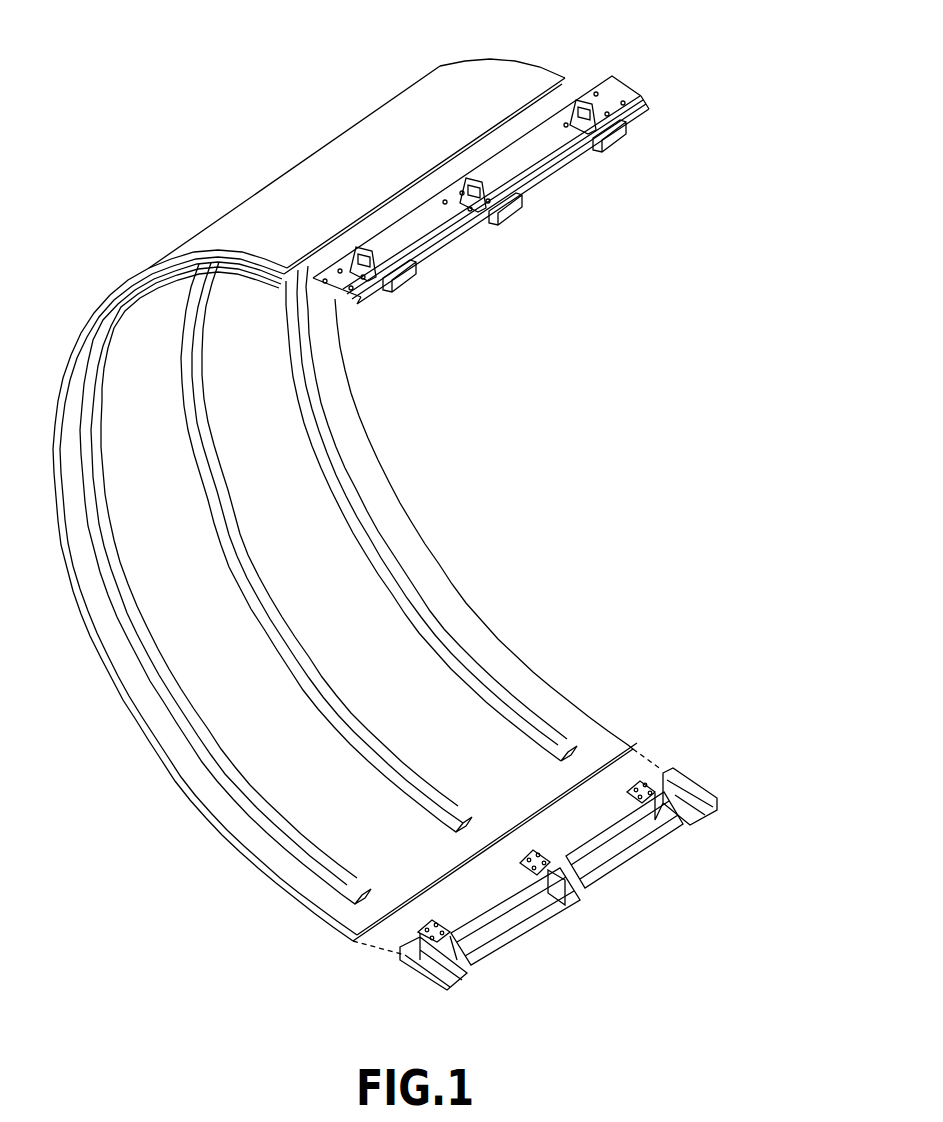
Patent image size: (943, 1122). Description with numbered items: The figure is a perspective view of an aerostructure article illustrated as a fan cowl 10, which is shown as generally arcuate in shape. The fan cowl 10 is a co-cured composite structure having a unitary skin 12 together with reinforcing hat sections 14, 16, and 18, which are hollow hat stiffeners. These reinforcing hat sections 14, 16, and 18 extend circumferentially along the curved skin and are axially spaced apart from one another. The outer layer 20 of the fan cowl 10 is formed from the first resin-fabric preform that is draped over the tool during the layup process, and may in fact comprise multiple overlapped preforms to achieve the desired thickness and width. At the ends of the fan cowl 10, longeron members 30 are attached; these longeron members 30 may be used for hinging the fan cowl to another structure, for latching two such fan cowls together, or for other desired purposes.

The fan cowl 10 is at (541, 485).
The unitary skin 12 is at (588, 714).
The reinforcing hat section 14 is at (316, 853).
The reinforcing hat section 16 is at (414, 770).
The reinforcing hat section 18 is at (527, 745).
The outer layer 20 is at (487, 76).
The longeron member 30 is at (453, 237).